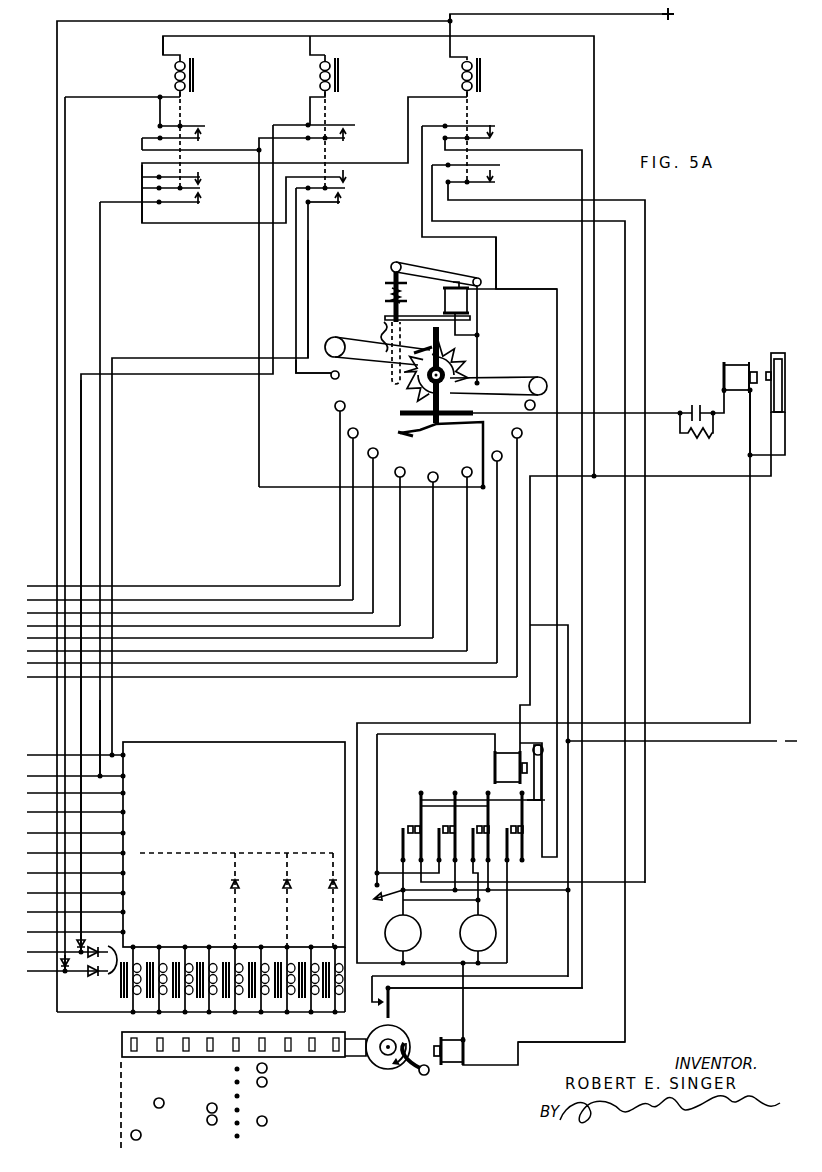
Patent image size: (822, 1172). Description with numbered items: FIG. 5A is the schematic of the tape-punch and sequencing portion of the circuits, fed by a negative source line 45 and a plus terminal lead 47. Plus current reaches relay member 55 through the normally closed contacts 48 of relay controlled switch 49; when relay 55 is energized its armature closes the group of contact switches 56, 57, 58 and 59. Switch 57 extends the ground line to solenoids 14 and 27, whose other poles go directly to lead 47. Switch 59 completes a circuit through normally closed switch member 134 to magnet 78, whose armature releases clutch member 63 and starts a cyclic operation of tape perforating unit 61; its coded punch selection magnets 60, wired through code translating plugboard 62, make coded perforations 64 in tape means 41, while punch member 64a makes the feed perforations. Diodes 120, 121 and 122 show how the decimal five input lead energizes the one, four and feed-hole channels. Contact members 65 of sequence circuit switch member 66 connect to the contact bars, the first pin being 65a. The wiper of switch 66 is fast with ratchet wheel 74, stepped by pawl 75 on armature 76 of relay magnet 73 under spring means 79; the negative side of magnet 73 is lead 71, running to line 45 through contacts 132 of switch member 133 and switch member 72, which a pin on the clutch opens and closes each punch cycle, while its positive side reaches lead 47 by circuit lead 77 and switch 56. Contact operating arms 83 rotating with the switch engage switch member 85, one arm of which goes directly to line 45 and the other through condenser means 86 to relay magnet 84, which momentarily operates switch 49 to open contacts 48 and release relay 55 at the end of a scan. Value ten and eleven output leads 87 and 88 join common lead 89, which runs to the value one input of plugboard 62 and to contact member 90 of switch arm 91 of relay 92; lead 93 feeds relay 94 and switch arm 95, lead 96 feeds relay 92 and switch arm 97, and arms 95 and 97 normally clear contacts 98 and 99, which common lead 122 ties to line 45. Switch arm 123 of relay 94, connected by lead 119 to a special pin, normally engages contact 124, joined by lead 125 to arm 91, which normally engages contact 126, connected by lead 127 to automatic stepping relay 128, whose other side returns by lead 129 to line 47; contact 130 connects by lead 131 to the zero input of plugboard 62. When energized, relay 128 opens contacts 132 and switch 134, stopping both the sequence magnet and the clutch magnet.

The plus terminal lead 47 is at (631, 18).
The lead 129 is at (452, 23).
The relay means 92 is at (186, 57).
The relay member 94 is at (333, 57).
The automatic stepping relay 128 is at (473, 57).
The lead line 127 is at (444, 97).
The switch arm 97 is at (206, 127).
The contact member 98 is at (202, 135).
The common lead 122 is at (248, 142).
The switch arm 95 is at (346, 127).
The contact member 99 is at (345, 132).
The lead 125 is at (142, 190).
The contact member 126 is at (200, 186).
The switch arm 91 is at (205, 190).
The contact member 90 is at (198, 198).
The contact 124 is at (350, 181).
The switch arm 123 is at (348, 191).
The contact member 130 is at (345, 205).
The circuit lead 131 is at (308, 273).
The lead line 119 is at (298, 380).
The normally closed contacts 132 is at (493, 129).
The switch member 133 is at (492, 139).
The circuit lead 71 is at (548, 150).
The normally closed switch member 134 is at (486, 184).
The circuit lead 77 is at (557, 291).
The armature 76 is at (430, 271).
The spring means 79 is at (390, 301).
The pawl 75 is at (391, 378).
The relay magnet 73 is at (447, 305).
The ratchet wheel 74 is at (478, 367).
The sequence circuit switch member 66 is at (402, 401).
The contact members 65 is at (336, 410).
The first pin 65a is at (525, 405).
The contact operating arm 83 is at (444, 410).
The switch member 85 is at (468, 428).
The pulse type circuit condenser means 86 is at (698, 439).
The relay magnet 84 is at (741, 365).
The relay controlled switch 49 is at (785, 393).
The normally closed contacts 48 is at (778, 355).
The negative source line 45 is at (718, 743).
The lead line 93 is at (81, 710).
The lead 96 is at (65, 743).
The lead line 89 is at (100, 716).
The output value lead 87 is at (50, 954).
The output value lead 88 is at (49, 968).
The code translating plugboard 62 is at (280, 742).
The diode 121 is at (283, 886).
The diode 120 is at (330, 884).
The coded punch selection magnets 60 is at (118, 995).
The tape perforating unit 61 is at (122, 1043).
The punched holes 64 is at (183, 1052).
The punch member 64a is at (236, 1052).
The tape means 41 is at (125, 1105).
The relay member 55 is at (497, 769).
The contact switch 59 is at (403, 827).
The contact switch 58 is at (439, 828).
The contact switch 57 is at (473, 828).
The contact switch 56 is at (507, 828).
The solenoid 27 is at (403, 940).
The solenoid 14 is at (478, 940).
The switch member 72 is at (380, 1010).
The clutch member 63 is at (385, 1070).
The magnet 78 is at (452, 1063).